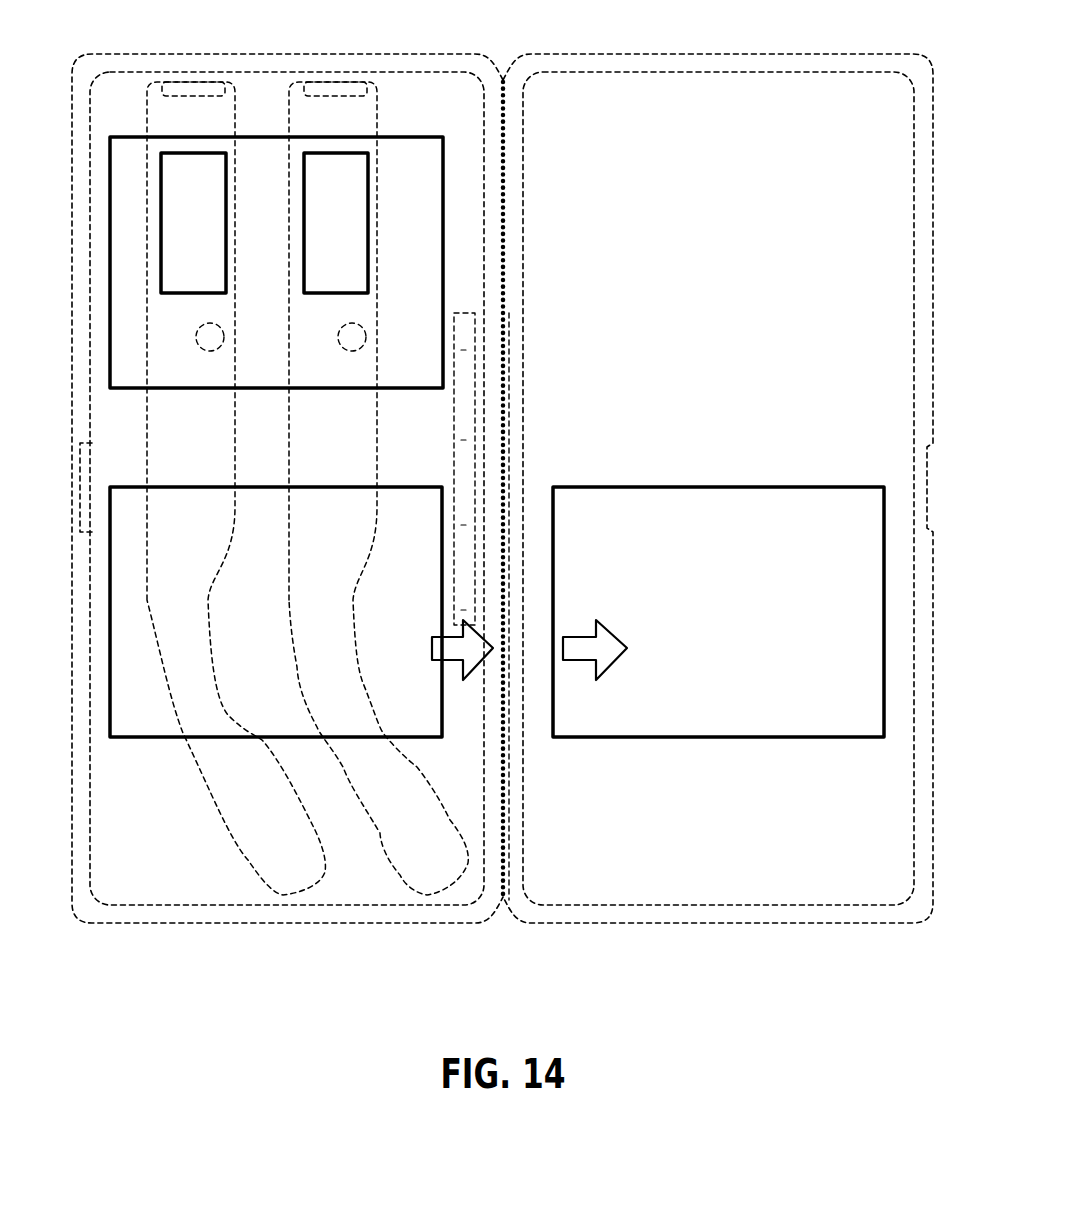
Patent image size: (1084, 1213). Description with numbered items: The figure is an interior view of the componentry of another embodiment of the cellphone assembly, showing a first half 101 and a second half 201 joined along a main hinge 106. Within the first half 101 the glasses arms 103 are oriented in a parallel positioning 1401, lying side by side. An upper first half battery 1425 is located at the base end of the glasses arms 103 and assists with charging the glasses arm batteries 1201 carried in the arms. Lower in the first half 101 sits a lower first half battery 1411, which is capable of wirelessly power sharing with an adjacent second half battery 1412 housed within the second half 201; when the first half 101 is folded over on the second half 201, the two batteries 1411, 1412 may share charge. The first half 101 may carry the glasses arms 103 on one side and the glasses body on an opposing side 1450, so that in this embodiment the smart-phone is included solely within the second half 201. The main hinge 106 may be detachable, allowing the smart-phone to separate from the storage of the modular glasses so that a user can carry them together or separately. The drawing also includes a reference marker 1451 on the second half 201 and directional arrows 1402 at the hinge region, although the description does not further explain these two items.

The first half 101 is at (70, 135).
The second half 201 is at (734, 461).
The interior panel of second half 1451 is at (833, 305).
The main hinge 106 is at (493, 395).
The zipper pull / slider direction arrows 1402 is at (452, 668).
The upper first half battery 1425 is at (386, 190).
The glasses arm batteries 1201 is at (172, 234).
The lower first half battery 1411 is at (122, 722).
The second half battery 1412 is at (698, 622).
The glasses arms 103 is at (370, 546).
The parallel positioning 1401 is at (227, 410).
The opposing side 1450 is at (364, 932).